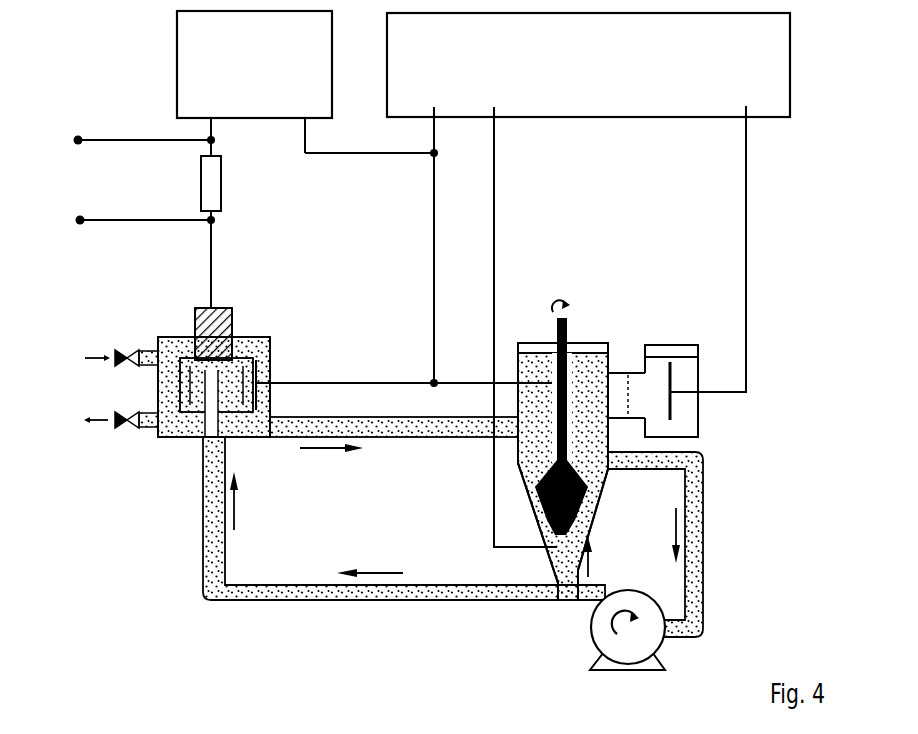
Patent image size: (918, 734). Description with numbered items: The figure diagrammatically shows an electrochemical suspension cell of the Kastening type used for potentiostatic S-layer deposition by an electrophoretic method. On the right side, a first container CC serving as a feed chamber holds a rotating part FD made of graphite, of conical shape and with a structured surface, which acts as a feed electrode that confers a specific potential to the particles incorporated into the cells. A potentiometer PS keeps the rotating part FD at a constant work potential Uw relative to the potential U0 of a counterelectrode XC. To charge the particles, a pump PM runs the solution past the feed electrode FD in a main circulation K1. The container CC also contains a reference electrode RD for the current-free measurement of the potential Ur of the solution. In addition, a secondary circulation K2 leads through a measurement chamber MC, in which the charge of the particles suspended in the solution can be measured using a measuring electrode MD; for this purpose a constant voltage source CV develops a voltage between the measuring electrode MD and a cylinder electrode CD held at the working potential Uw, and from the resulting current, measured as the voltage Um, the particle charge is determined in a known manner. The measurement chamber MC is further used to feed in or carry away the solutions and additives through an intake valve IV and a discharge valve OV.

The constant voltage source CV is at (267, 80).
The potentiometer PS is at (607, 77).
The work potential Uw is at (433, 234).
The potential of the solution Ur is at (520, 314).
The potential of the counterelectrode U0 is at (713, 236).
The voltage Um is at (147, 213).
The measurement chamber MC is at (172, 336).
The measuring electrode MD is at (233, 332).
The cylinder electrode CD is at (271, 359).
The intake valve IV is at (112, 373).
The discharge valve OV is at (111, 435).
The first container CC is at (606, 371).
The counterelectrode XC is at (698, 361).
The rotating part FD is at (537, 503).
The reference electrode RD is at (556, 548).
The main circulation K1 is at (643, 544).
The secondary circulation K2 is at (404, 508).
The pump PM is at (612, 630).